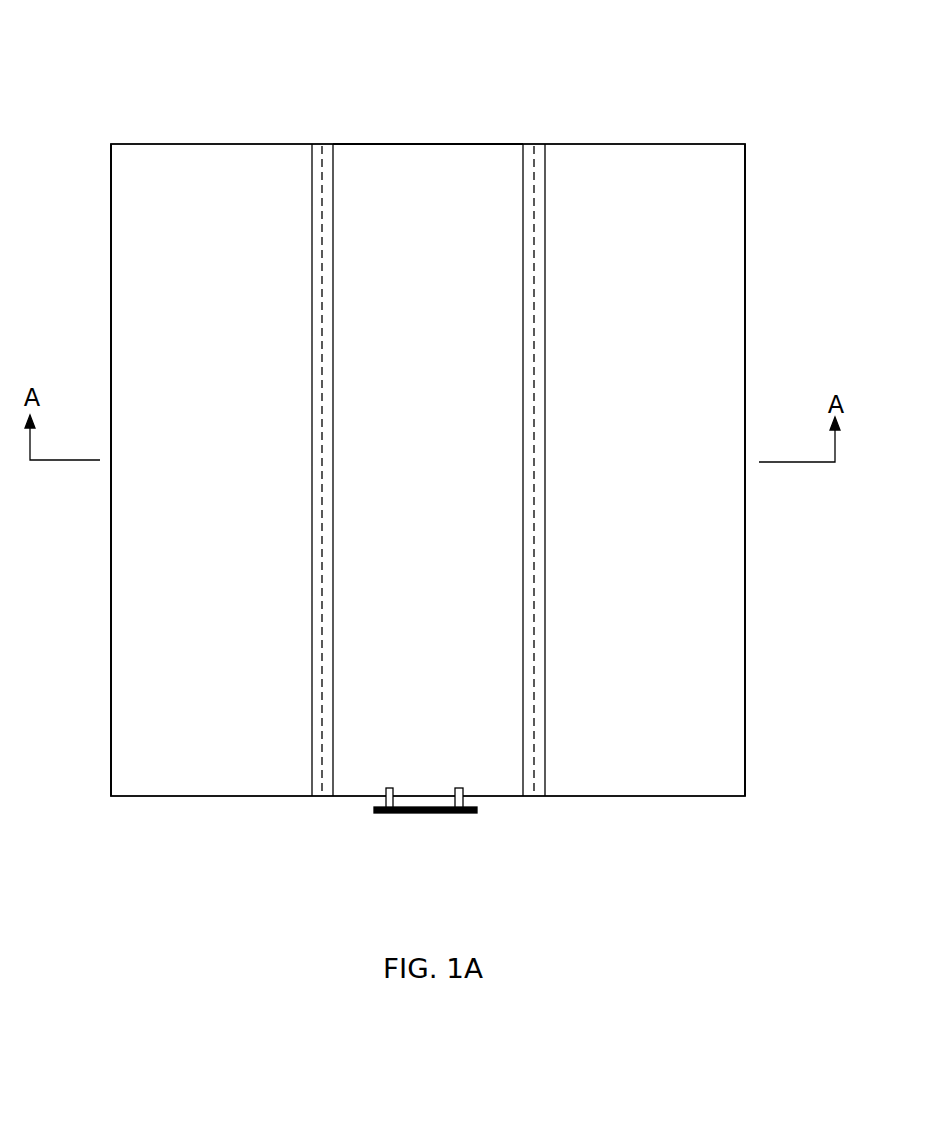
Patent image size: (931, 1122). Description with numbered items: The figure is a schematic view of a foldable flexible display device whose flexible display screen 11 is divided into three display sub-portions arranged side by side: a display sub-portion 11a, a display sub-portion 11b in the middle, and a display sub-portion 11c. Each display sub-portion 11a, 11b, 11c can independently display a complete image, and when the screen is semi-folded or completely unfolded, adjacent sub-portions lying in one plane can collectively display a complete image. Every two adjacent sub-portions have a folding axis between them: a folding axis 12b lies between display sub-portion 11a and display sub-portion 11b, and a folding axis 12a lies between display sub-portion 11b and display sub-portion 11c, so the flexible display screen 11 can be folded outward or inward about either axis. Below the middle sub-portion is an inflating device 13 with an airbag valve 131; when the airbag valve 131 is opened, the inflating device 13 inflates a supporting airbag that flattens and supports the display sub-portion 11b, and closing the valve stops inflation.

The flexible display screen 11 is at (147, 85).
The display sub-portion 11a is at (124, 235).
The display sub-portion 11b is at (452, 168).
The display sub-portion 11c is at (722, 293).
The folding axis 12a is at (538, 692).
The folding axis 12b is at (321, 690).
The inflating device 13 is at (446, 817).
The airbag valve 131 is at (378, 797).